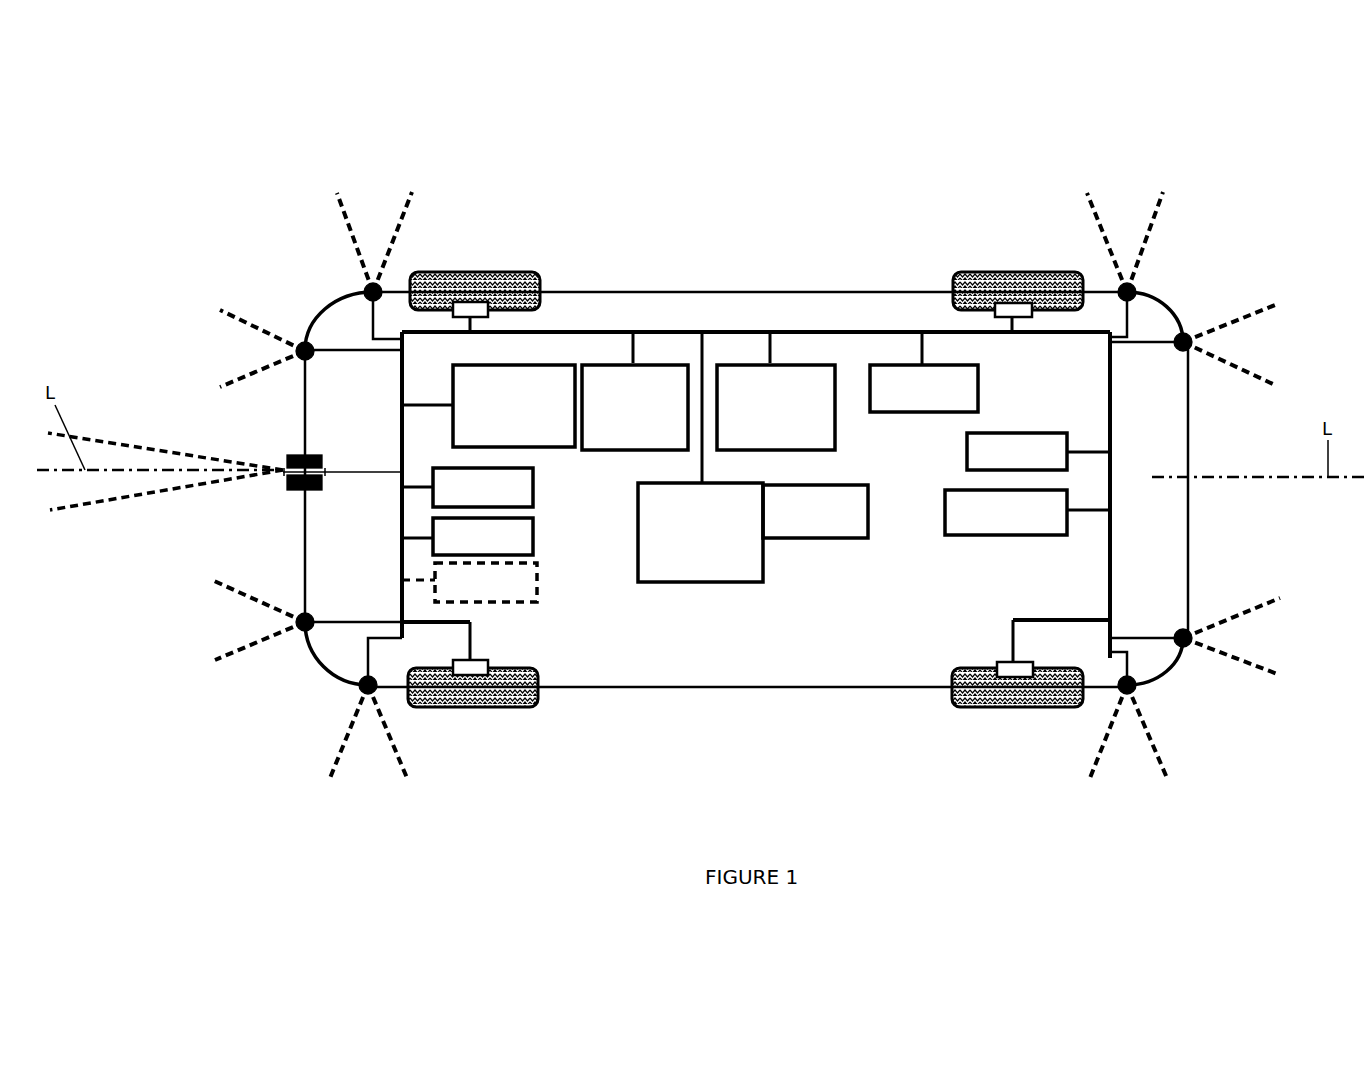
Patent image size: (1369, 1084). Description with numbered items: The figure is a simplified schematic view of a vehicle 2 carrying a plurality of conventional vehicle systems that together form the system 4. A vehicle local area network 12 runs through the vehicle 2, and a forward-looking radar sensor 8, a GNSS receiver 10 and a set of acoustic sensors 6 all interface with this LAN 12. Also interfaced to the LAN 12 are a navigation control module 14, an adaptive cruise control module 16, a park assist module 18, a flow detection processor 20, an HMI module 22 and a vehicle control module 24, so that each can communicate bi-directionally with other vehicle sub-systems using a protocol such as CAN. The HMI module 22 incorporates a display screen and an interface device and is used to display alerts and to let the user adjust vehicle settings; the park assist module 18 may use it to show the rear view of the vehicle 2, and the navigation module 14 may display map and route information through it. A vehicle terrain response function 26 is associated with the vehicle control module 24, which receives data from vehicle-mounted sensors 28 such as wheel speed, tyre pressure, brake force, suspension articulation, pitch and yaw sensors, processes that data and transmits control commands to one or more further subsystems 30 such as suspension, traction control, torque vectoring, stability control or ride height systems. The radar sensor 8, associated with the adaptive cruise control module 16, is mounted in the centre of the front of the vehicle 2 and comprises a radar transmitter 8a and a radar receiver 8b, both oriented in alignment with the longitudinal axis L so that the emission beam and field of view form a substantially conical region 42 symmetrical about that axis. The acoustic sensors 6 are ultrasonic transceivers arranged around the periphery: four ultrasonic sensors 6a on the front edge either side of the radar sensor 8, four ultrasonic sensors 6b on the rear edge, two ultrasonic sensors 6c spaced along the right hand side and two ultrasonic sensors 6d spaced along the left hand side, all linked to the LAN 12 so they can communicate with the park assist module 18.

The vehicle 2 is at (182, 223).
The system 4 is at (717, 622).
The acoustic sensors 6 is at (357, 285).
The ultrasonic sensors 6a is at (304, 351).
The ultrasonic sensors 6b is at (1185, 342).
The ultrasonic sensors 6c is at (373, 290).
The ultrasonic sensors 6d is at (368, 688).
The forward-looking radar sensor 8 is at (306, 470).
The radar transmitter 8a is at (287, 460).
The radar receiver 8b is at (288, 490).
The GNSS receiver 10 is at (957, 540).
The vehicle local area network 12 is at (858, 330).
The navigation control module 14 is at (1037, 432).
The adaptive cruise control module 16 is at (757, 363).
The park assist module 18 is at (660, 363).
The flow detection processor 20 is at (552, 365).
The HMI module 22 is at (897, 365).
The vehicle control module 24 is at (638, 582).
The vehicle terrain response function 26 is at (857, 545).
The vehicle-mounted sensors 28 is at (473, 300).
The further subsystems 30 is at (533, 490).
The conical region 42 is at (113, 505).